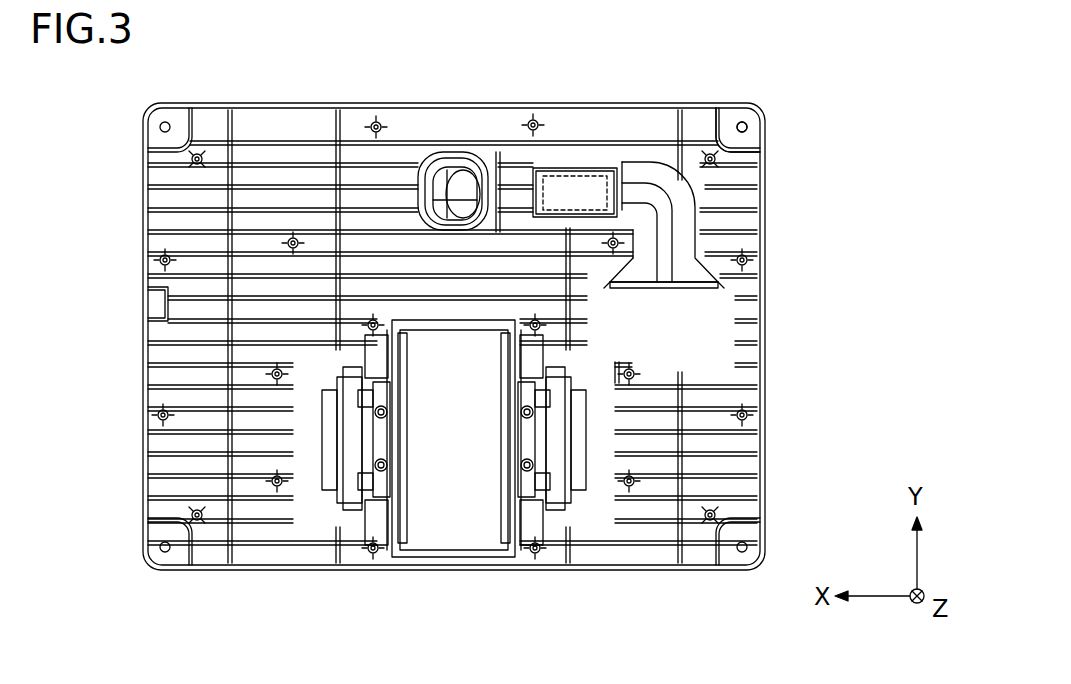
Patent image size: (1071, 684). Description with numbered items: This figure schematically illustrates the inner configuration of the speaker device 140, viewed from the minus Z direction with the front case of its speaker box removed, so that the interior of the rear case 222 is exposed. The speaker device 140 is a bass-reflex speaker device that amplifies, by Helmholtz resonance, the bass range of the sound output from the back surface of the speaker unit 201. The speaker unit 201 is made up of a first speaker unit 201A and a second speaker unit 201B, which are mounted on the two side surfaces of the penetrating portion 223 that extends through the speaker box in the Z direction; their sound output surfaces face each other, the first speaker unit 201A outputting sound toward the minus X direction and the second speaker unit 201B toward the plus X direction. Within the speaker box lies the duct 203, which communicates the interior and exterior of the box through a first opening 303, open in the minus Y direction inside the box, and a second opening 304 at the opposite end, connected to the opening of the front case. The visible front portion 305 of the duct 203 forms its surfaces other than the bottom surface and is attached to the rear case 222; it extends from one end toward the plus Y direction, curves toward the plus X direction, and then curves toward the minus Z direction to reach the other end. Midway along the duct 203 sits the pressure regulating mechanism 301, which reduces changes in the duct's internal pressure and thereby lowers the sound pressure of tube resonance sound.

The speaker device 140 is at (275, 95).
The rear case 222 is at (765, 128).
The second opening 304 is at (437, 158).
The pressure regulating mechanism 301 is at (575, 167).
The duct 203 is at (650, 171).
The front portion 305 is at (667, 183).
The first opening 303 is at (680, 288).
The penetrating portion 223 is at (443, 522).
The speaker unit 201 is at (432, 486).
The first speaker unit 201A is at (353, 488).
The second speaker unit 201B is at (557, 495).